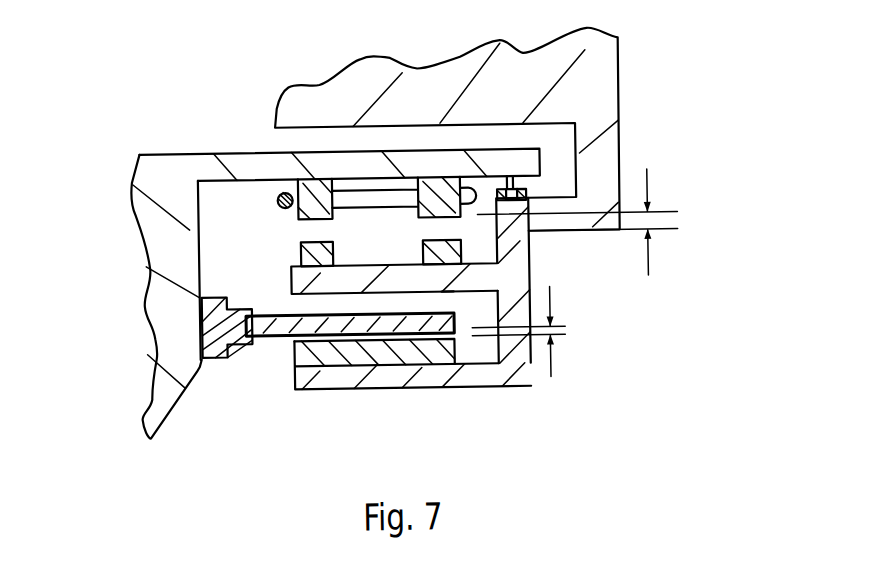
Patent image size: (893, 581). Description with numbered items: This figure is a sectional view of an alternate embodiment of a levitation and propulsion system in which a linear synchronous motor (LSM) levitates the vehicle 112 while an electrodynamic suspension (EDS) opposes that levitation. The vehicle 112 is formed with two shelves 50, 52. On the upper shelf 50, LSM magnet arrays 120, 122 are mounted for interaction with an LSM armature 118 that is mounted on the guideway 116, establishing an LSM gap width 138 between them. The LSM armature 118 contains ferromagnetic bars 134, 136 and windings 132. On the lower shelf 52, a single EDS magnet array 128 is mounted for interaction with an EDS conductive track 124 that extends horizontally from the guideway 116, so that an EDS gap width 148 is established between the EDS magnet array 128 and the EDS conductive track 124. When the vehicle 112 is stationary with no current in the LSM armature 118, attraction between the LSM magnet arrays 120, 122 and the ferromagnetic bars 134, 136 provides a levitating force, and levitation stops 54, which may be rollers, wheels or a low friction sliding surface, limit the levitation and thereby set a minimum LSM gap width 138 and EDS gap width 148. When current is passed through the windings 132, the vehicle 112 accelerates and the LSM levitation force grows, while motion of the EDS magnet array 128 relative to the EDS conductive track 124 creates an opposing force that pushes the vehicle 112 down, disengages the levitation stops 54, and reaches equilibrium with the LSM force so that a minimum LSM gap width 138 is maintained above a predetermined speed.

The vehicle 112 is at (602, 104).
The LSM armature 118 is at (317, 175).
The guideway 116 is at (152, 317).
The windings 132 is at (279, 197).
The ferromagnetic bar 134 is at (300, 218).
The ferromagnetic bar 136 is at (446, 190).
The levitation stops 54 is at (545, 199).
The LSM magnet array 120 is at (299, 258).
The LSM magnet array 122 is at (423, 251).
The shelf 50 is at (298, 266).
The EDS conductive track 124 is at (443, 308).
The EDS magnet array 128 is at (411, 383).
The shelf 52 is at (476, 388).
The LSM gap width 138 is at (653, 270).
The EDS gap width 148 is at (552, 372).